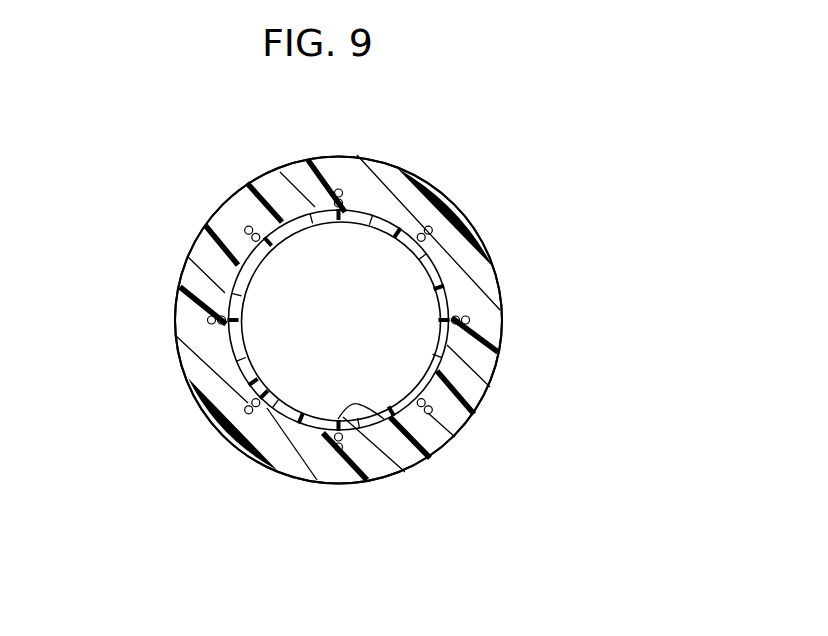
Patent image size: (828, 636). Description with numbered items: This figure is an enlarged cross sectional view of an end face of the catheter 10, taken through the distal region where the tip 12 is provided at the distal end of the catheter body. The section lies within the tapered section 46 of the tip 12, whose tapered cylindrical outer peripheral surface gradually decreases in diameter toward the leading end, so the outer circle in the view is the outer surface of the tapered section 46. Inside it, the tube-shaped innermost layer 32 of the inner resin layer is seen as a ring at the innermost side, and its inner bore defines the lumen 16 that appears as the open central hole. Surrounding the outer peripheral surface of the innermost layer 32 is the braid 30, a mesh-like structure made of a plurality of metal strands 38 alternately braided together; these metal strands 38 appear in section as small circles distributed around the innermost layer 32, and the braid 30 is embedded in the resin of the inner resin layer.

The bearing assembly 10 is at (505, 203).
The tip 12 is at (512, 322).
The tapered section 46 is at (419, 320).
The innermost layer 32 is at (238, 367).
The braid 30 is at (462, 333).
The lumen 16 is at (365, 414).
The metal strands for braiding 38 is at (248, 227).